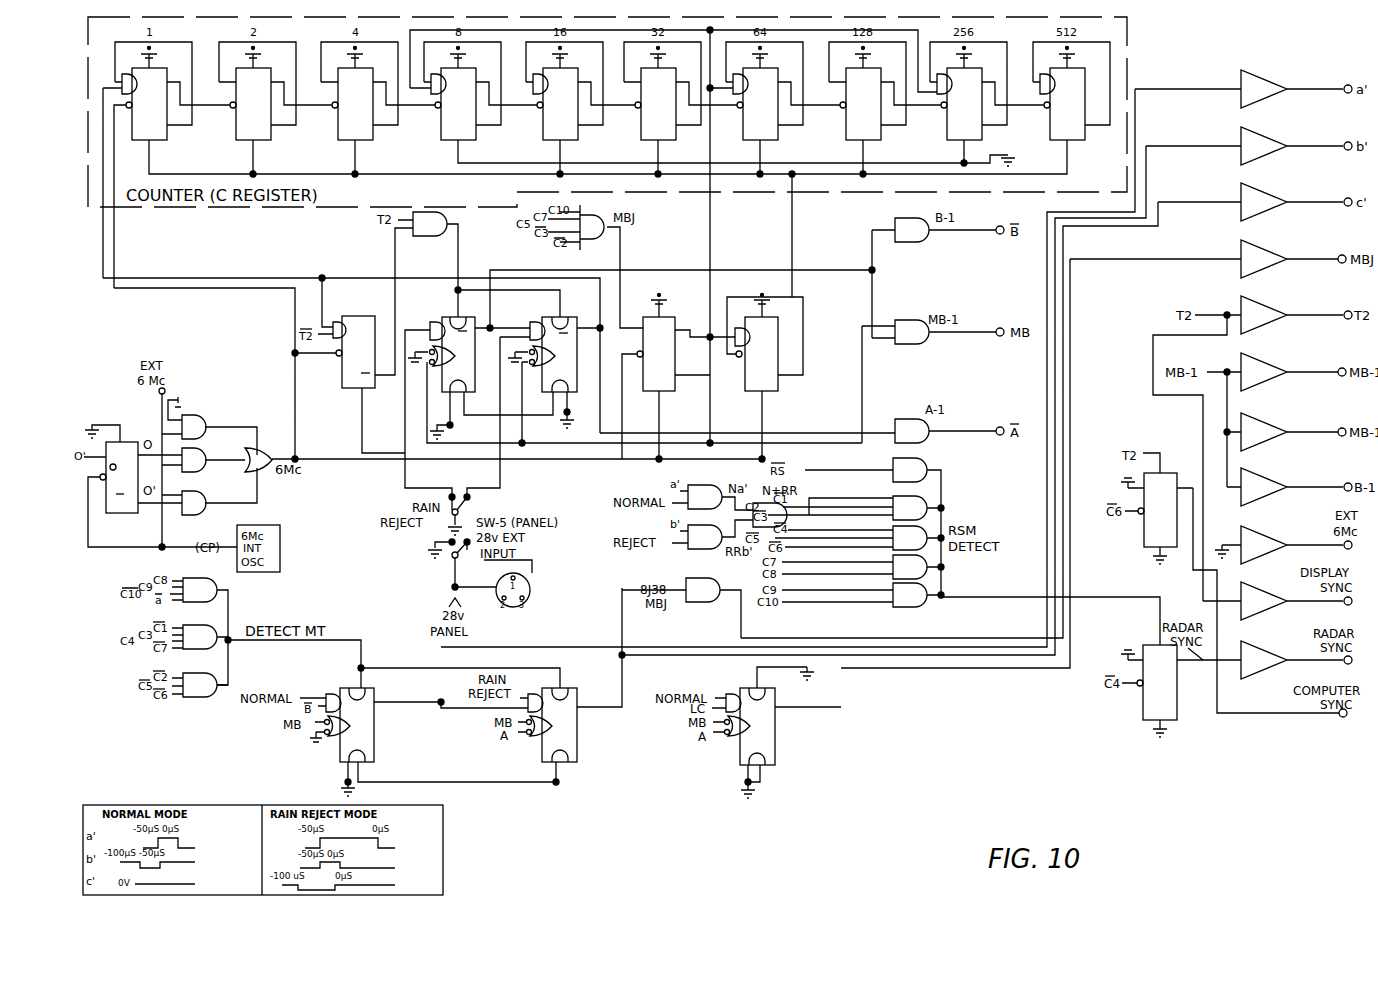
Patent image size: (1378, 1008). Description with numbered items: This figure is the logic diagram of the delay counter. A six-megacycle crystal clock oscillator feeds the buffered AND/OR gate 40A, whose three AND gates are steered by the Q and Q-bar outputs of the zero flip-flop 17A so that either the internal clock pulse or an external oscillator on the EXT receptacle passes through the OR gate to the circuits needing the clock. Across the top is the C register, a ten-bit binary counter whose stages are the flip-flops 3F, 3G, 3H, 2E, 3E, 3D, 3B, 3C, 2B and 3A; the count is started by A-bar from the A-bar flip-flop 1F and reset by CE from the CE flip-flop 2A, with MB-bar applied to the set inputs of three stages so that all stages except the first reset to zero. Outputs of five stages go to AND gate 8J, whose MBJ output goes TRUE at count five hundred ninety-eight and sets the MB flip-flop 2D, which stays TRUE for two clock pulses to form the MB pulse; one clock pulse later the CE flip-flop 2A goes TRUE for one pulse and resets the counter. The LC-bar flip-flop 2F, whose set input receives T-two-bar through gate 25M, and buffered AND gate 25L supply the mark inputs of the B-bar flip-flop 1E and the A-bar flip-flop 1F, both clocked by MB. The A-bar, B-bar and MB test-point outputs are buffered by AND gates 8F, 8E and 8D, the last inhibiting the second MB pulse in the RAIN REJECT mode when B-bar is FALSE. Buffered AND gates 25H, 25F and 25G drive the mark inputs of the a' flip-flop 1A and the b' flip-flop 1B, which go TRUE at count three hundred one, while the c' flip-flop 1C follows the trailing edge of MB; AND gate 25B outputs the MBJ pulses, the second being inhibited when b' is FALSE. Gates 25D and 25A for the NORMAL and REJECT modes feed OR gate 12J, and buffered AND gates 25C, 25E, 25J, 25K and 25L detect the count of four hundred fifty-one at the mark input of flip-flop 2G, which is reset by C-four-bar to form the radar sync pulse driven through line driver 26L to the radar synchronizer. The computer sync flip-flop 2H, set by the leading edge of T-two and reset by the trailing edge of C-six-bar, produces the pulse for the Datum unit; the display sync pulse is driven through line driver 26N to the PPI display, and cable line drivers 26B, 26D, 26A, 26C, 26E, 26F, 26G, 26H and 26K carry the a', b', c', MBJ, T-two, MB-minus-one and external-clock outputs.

The counter flip-flop C1 3F is at (149, 104).
The counter flip-flop C2 3G is at (253, 104).
The counter flip-flop C3 3H is at (355, 104).
The counter flip-flop C4 2E is at (458, 104).
The counter flip-flop C5 3E is at (560, 104).
The counter flip-flop C6 3D is at (658, 104).
The counter flip-flop C7 3B is at (760, 104).
The counter flip-flop C8 3C is at (863, 104).
The counter flip-flop C9 2B is at (964, 104).
The counter flip-flop C10 3A is at (1067, 104).
The output amplifier a' 26B is at (1243, 89).
The output amplifier b' 26D is at (1249, 146).
The output amplifier c' 26A is at (1255, 202).
The output amplifier MBJ 26C is at (1208, 259).
The output amplifier T2 26E is at (1273, 315).
The output amplifier MB-1 26F is at (1276, 372).
The output amplifier MB-1 26G is at (1286, 432).
The output amplifier B-1 26H is at (1289, 487).
The output amplifier EXT 6Mc 26K is at (1283, 545).
The line driver 26N is at (1277, 601).
The line driver 26L is at (1264, 660).
The computer sync pulse flip-flop 2H is at (1160, 510).
The radar sync flip-flop 2G is at (1160, 682).
The buffered AND gate 25K is at (866, 470).
The buffered AND gate 25E is at (847, 508).
The buffered AND gate 25C is at (851, 538).
The buffered AND gate 25L is at (854, 567).
The buffered AND gate 25J is at (854, 595).
The AND gate 25D is at (712, 497).
The AND gate 25A is at (712, 534).
The OR gate 12J is at (770, 515).
The AND gate 25B is at (681, 608).
The MBJ AND gate 8J is at (595, 266).
The buffered AND gate 8E is at (938, 230).
The AND gate 8D is at (933, 332).
The buffered AND gate 8F is at (802, 431).
The AND gate 25M is at (422, 224).
The LC-bar flip-flop 2F is at (346, 352).
The B flip-flop 1E is at (453, 354).
The A-bar flip-flop 1F is at (554, 354).
The MB flip-flop 2D is at (659, 354).
The CE flip-flop 2A is at (756, 354).
The 0 flip-flop 17A is at (122, 477).
The buffered AND/OR gate 40A is at (208, 427).
The buffered AND gate 25H is at (199, 631).
The buffered AND gate 25F is at (200, 637).
The buffered AND gate 25G is at (200, 685).
The a' flip-flop 1A is at (337, 725).
The b' flip-flop 1B is at (547, 725).
The c' flip-flop 1C is at (763, 716).